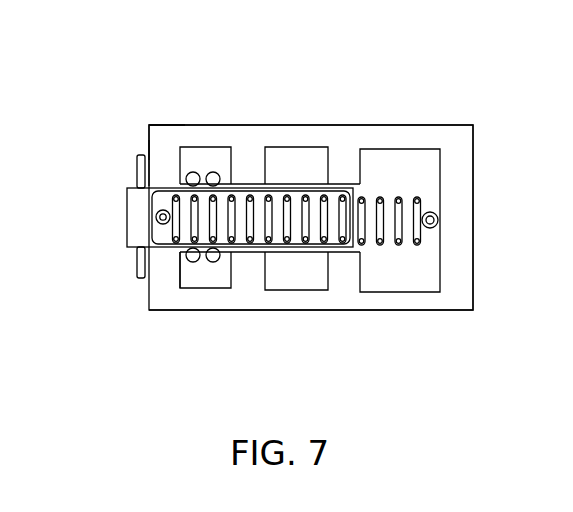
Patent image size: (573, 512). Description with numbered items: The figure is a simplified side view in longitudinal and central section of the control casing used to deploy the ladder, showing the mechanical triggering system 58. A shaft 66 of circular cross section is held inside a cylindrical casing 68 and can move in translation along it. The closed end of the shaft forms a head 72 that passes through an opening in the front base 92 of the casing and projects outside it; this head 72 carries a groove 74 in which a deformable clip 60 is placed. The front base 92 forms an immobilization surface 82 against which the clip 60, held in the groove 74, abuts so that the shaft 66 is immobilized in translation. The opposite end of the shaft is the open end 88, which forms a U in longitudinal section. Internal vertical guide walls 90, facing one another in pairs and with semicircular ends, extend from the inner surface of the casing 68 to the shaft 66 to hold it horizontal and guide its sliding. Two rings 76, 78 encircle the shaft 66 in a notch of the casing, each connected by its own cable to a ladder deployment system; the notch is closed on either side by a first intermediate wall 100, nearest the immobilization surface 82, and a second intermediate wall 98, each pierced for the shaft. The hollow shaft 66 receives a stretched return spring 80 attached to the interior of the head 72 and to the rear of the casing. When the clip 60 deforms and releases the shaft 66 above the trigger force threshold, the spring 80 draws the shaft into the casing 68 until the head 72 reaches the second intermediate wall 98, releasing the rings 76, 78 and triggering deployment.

The triggering system 58 is at (188, 110).
The deformable clip 60 is at (137, 267).
The shaft 66 is at (133, 227).
The casing 68 is at (268, 137).
The head of the shaft 72 is at (128, 192).
The groove 74 is at (137, 158).
The ring 76 is at (188, 261).
The ring 78 is at (215, 262).
The return spring 80 is at (362, 195).
The immobilization surface 82 is at (148, 139).
The open end of the shaft 88 is at (342, 253).
The internal vertical guide walls 90 is at (237, 163).
The front base 92 is at (148, 145).
The second intermediate wall 98 is at (232, 270).
The first intermediate wall 100 is at (179, 270).